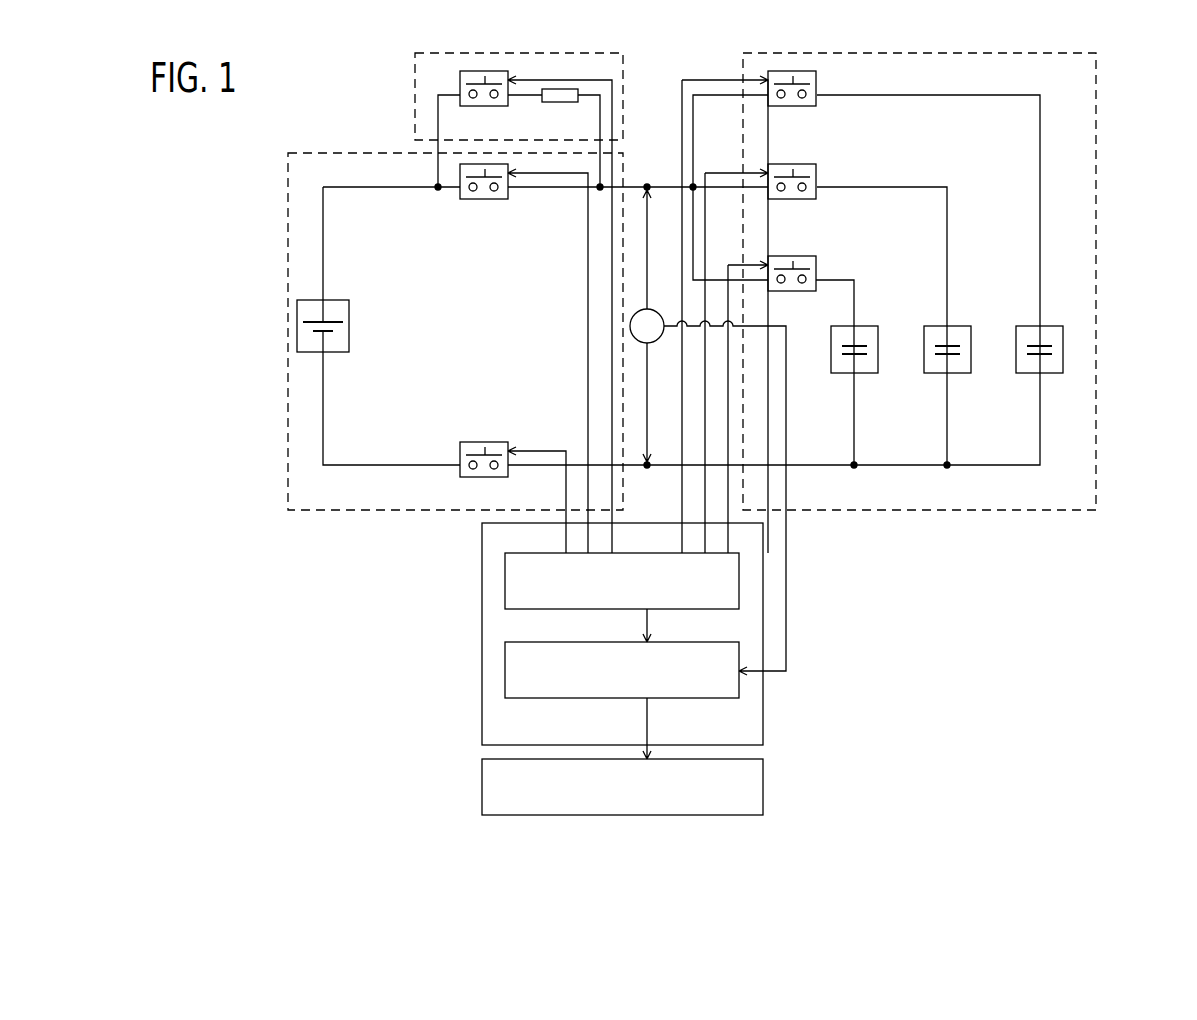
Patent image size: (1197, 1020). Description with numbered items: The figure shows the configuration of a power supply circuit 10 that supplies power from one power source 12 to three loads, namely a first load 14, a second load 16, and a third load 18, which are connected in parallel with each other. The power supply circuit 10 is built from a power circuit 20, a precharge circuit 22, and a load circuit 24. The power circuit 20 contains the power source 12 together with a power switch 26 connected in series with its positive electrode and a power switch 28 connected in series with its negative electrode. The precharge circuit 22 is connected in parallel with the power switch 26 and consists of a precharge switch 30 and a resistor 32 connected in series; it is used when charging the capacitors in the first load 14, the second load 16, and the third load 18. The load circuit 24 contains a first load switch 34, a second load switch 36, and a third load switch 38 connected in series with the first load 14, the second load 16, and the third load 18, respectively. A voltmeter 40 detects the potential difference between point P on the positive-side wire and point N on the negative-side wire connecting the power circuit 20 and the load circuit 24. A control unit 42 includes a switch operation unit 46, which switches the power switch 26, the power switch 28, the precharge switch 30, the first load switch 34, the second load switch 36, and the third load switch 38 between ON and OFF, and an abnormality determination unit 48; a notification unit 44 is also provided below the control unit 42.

The power supply circuit 10 is at (189, 177).
The power source 12 is at (349, 323).
The first load 14 is at (1047, 322).
The second load 16 is at (955, 322).
The third load 18 is at (862, 322).
The power circuit 20 is at (288, 281).
The precharge circuit 22 is at (415, 101).
The load circuit 24 is at (1098, 209).
The power switch 26 is at (485, 200).
The power switch 28 is at (487, 442).
The precharge switch 30 is at (492, 108).
The resistor 32 is at (560, 103).
The first load switch 34 is at (817, 78).
The second load switch 36 is at (817, 171).
The third load switch 38 is at (817, 265).
The voltmeter 40 is at (660, 309).
The control unit 42 is at (482, 551).
The notification unit 44 is at (482, 787).
The switch operation unit 46 is at (505, 580).
The abnormality determination unit 48 is at (505, 670).